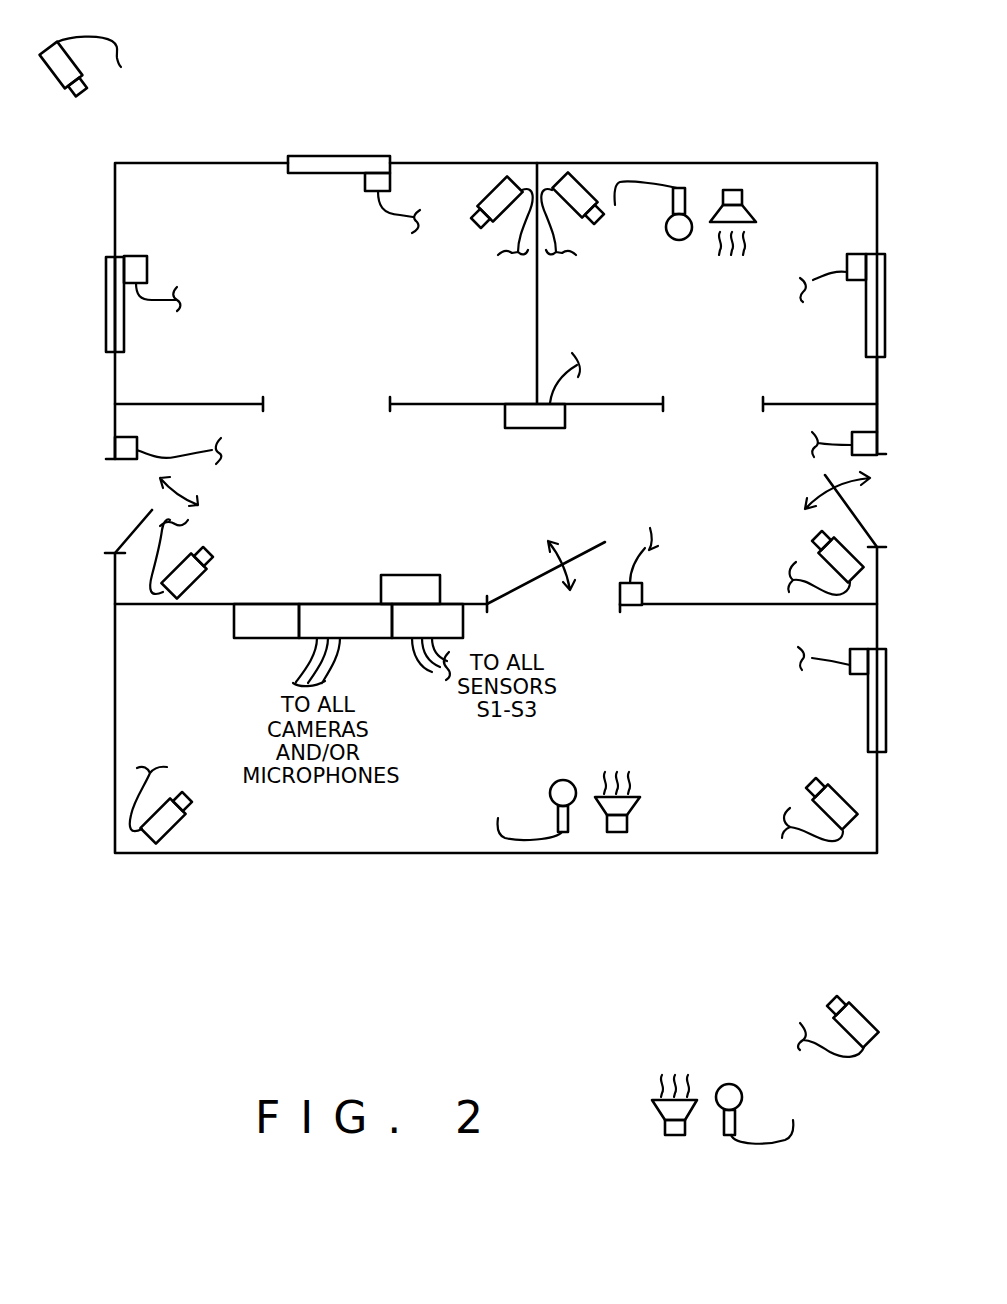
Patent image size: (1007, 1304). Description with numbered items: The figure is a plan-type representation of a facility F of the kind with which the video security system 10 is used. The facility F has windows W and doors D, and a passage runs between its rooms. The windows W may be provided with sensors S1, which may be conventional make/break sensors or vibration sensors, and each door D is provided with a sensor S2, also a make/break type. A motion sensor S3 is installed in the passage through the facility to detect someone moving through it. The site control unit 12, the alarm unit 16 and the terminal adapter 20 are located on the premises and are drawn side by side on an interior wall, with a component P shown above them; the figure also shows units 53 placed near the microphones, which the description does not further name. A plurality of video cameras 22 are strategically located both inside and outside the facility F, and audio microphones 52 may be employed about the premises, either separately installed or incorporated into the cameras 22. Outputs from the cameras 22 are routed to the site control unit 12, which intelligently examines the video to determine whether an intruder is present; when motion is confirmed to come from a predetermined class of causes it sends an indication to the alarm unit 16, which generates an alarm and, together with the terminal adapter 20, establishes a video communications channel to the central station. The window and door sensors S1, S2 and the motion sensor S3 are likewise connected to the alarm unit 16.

The video security system 10 is at (342, 937).
The site control unit 12 is at (346, 603).
The alarm unit 16 is at (463, 625).
The terminal adapter 20 is at (270, 638).
The video camera 22 is at (55, 76).
The audio microphone 52 is at (667, 235).
The speaker 53 is at (752, 207).
The window W is at (343, 155).
The door D is at (143, 520).
The facility F is at (362, 332).
The power supply P is at (415, 573).
The window sensor S1 is at (366, 192).
The door sensor S2 is at (128, 437).
The motion sensor S3 is at (532, 428).